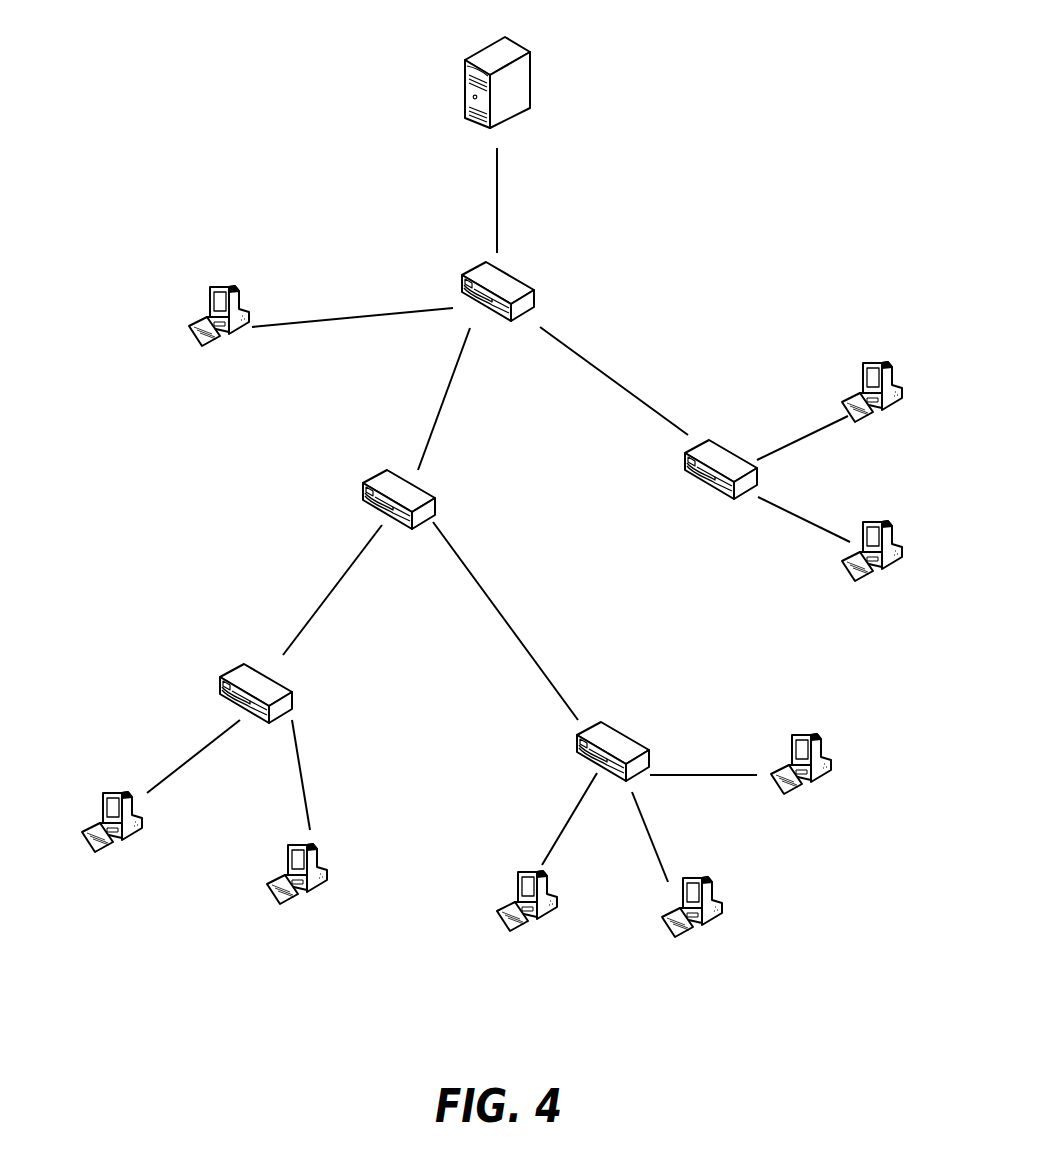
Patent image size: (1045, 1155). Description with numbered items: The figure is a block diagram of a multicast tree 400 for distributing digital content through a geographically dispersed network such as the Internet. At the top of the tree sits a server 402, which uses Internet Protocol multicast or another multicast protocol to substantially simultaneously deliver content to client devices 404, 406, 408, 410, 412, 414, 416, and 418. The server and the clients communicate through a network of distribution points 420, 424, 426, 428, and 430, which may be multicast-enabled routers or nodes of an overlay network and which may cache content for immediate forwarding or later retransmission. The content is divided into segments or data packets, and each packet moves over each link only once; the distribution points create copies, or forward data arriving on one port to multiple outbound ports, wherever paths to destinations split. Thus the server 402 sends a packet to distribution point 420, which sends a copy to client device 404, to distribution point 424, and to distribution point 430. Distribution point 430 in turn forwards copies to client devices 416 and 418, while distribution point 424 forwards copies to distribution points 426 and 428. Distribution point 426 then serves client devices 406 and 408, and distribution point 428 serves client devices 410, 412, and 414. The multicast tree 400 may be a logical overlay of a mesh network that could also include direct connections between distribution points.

The multicast tree 400 is at (757, 150).
The server 402 is at (525, 47).
The client device 404 is at (233, 288).
The client device 406 is at (108, 792).
The client device 408 is at (313, 847).
The client device 410 is at (545, 873).
The client device 412 is at (707, 878).
The client device 414 is at (813, 737).
The client device 416 is at (873, 522).
The client device 418 is at (870, 362).
The distribution point 420 is at (523, 278).
The distribution point 424 is at (417, 485).
The distribution point 426 is at (287, 683).
The distribution point 428 is at (625, 733).
The distribution point 430 is at (720, 445).